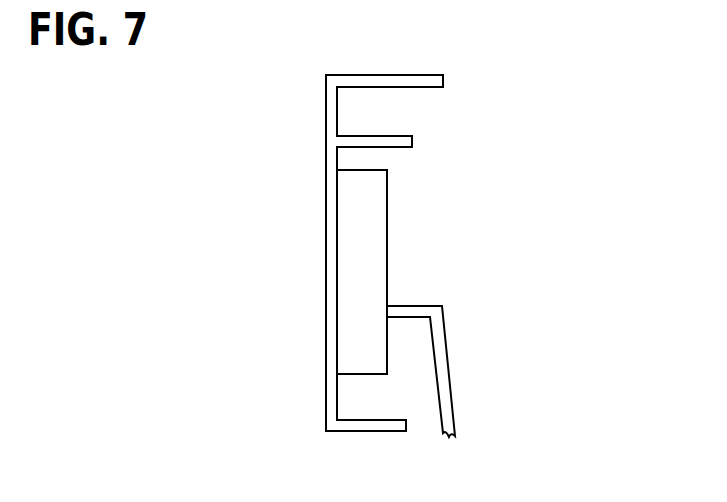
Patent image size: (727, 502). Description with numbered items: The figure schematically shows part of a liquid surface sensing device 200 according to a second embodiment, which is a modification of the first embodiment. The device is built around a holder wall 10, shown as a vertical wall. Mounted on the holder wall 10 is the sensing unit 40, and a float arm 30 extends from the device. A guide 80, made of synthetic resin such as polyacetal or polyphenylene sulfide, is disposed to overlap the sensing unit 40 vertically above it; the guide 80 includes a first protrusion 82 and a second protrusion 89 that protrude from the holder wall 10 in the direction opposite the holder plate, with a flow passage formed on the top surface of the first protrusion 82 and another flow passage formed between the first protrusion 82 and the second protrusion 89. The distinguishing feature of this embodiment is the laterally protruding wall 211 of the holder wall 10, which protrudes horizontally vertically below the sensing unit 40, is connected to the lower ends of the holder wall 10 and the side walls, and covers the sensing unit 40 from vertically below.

The liquid surface sensing device 200 is at (301, 89).
The holder wall 10 is at (327, 263).
The guide 80 is at (540, 65).
The first protrusion 82 is at (443, 82).
The second protrusion 89 is at (412, 141).
The sensing unit 40 is at (388, 237).
The float arm 30 is at (450, 365).
The laterally protruding wall 211 is at (366, 431).